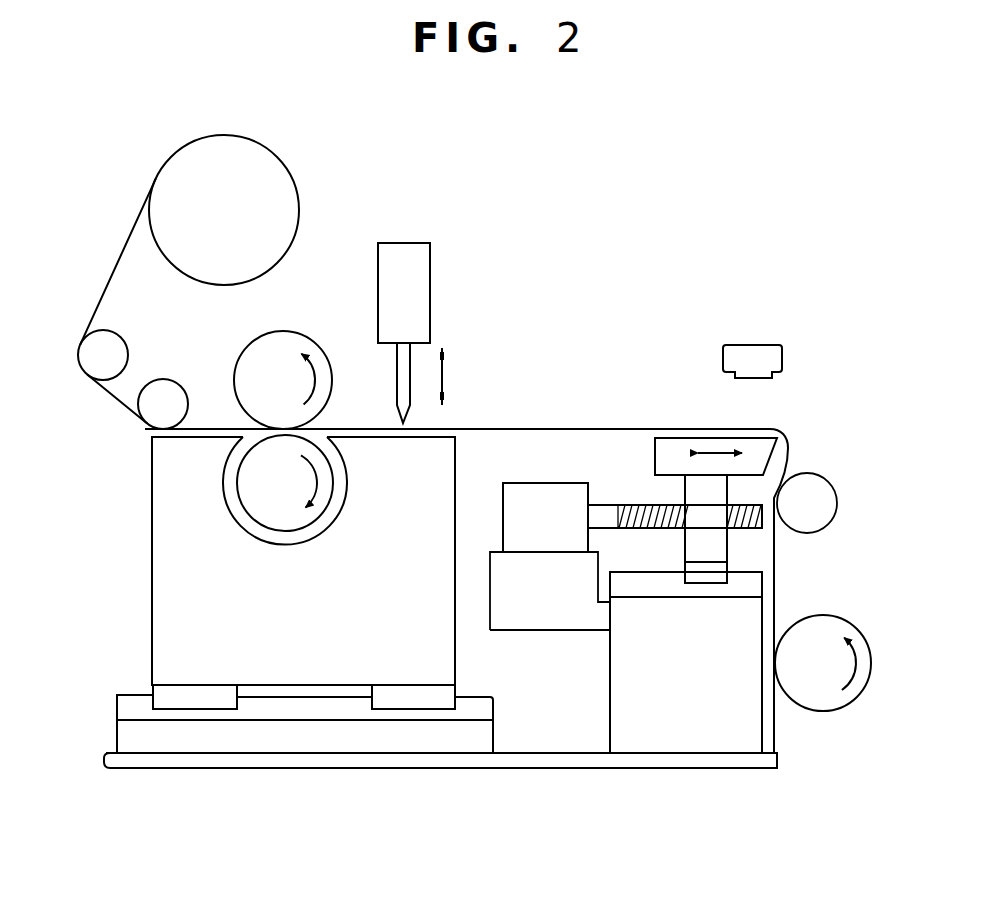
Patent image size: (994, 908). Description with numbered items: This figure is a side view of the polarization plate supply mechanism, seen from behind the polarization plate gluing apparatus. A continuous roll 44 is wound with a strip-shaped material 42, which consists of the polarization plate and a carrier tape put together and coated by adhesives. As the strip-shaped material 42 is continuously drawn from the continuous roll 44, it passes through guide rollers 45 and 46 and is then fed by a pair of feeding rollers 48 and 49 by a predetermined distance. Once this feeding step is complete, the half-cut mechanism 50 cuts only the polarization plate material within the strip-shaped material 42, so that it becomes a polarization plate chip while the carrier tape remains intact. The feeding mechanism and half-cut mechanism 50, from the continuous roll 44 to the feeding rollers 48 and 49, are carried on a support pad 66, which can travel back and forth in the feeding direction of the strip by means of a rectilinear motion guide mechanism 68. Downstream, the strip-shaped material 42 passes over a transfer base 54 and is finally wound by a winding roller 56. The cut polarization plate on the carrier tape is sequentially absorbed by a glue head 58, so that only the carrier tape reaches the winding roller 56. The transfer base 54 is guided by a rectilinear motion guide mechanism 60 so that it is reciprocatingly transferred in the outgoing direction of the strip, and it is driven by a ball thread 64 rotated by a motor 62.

The strip-shaped material 42 is at (123, 250).
The continuous roll 44 is at (288, 167).
The guide roller 45 is at (118, 337).
The guide roller 46 is at (170, 383).
The feeding roller 48 is at (297, 337).
The feeding roller 49 is at (261, 540).
The half-cut mechanism 50 is at (430, 285).
The transfer base 54 is at (655, 450).
The winding roller 56 is at (830, 617).
The glue head 58 is at (753, 342).
The rectilinear motion guide mechanism 60 is at (660, 590).
The motor 62 is at (525, 535).
The ball thread 64 is at (623, 503).
The support pad 66 is at (152, 563).
The rectilinear motion guide mechanism 68 is at (318, 713).